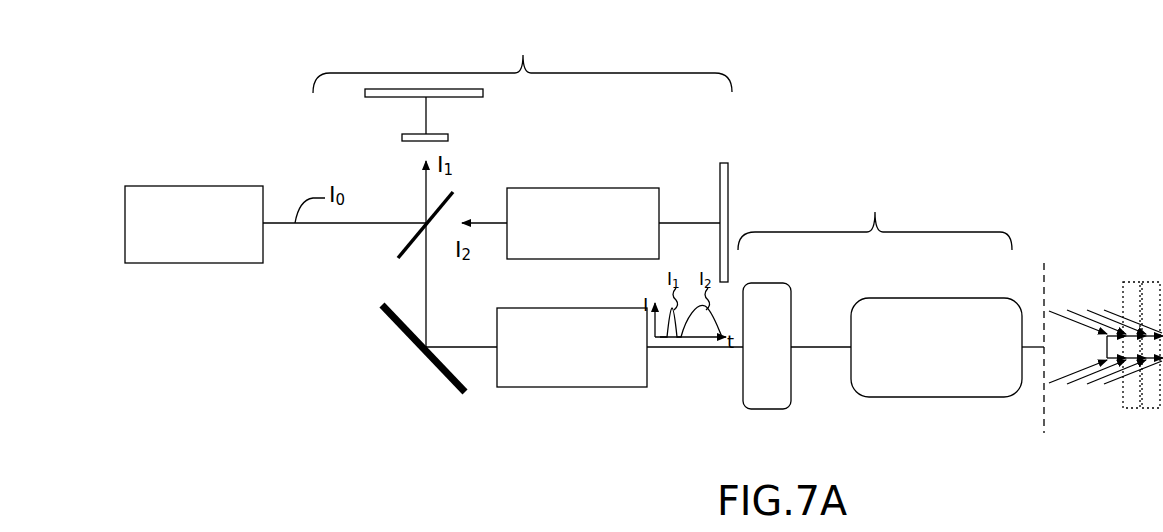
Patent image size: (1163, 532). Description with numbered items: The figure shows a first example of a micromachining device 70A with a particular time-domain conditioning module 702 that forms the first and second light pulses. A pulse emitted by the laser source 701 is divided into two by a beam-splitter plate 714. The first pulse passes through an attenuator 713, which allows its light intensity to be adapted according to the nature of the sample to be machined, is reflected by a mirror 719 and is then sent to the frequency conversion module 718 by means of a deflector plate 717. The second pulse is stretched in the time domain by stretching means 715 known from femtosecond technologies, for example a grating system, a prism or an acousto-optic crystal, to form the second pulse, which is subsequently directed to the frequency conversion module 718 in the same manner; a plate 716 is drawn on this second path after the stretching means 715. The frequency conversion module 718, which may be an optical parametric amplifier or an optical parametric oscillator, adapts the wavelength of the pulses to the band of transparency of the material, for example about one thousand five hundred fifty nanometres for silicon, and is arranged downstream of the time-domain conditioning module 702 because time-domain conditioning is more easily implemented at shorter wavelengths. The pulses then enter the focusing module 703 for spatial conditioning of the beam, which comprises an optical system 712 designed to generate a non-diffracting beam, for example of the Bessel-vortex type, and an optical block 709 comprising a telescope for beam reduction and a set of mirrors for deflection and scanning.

The micromachining device 70A is at (1060, 147).
The laser source 701 is at (148, 186).
The time-domain conditioning module 702 is at (523, 56).
The focusing module 703 is at (875, 213).
The optical block 709 is at (907, 298).
The optical system 712 is at (762, 283).
The attenuator 713 is at (400, 137).
The beam-splitter plate 714 is at (405, 243).
The time-domain stretching means 715 is at (578, 188).
The plate / shutter 716 is at (723, 190).
The deflector plate 717 is at (405, 334).
The frequency conversion module 718 is at (598, 388).
The mirror 719 is at (485, 93).